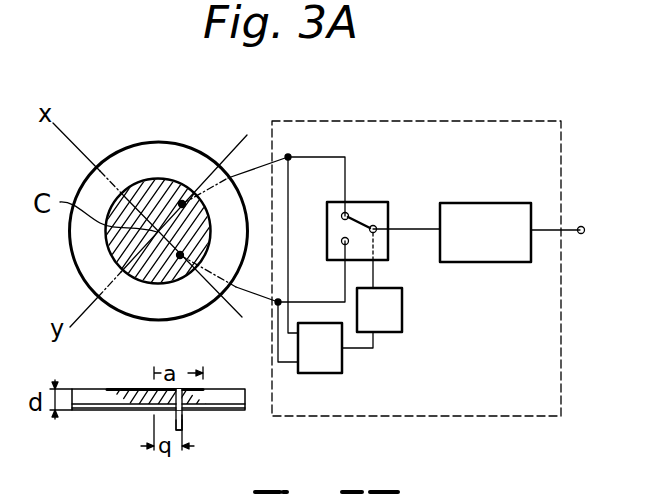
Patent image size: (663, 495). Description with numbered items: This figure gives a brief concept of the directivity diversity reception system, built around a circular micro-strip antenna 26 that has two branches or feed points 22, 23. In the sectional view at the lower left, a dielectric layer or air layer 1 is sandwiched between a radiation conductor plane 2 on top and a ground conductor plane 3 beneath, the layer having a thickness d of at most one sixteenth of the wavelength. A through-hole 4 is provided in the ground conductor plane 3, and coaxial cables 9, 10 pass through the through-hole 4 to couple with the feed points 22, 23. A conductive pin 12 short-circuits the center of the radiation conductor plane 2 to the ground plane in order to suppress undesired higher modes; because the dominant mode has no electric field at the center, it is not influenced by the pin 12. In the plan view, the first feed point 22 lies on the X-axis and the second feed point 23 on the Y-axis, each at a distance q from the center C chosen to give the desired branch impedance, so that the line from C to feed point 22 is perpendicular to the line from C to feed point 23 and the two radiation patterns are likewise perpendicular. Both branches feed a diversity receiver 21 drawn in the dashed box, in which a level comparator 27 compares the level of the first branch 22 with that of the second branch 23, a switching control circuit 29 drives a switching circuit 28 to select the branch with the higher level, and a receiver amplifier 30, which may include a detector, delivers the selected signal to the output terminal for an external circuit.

The dielectric layer 1 is at (238, 389).
The radiation conductor plane 2 is at (197, 389).
The ground conductor plane 3 is at (240, 412).
The through-hole 4 is at (175, 420).
The coaxial cable 9 is at (205, 457).
The coaxial cable 10 is at (183, 420).
The conductive pin 12 is at (120, 408).
The diversity receiver 21 is at (443, 120).
The first branch (feed point) 22 is at (186, 256).
The second branch (feed point) 23 is at (190, 203).
The circular micro-strip antenna 26 is at (152, 310).
The level comparator 27 is at (320, 373).
The switching circuit 28 is at (372, 202).
The switching control circuit 29 is at (402, 309).
The receiver amplifier 30 is at (488, 203).